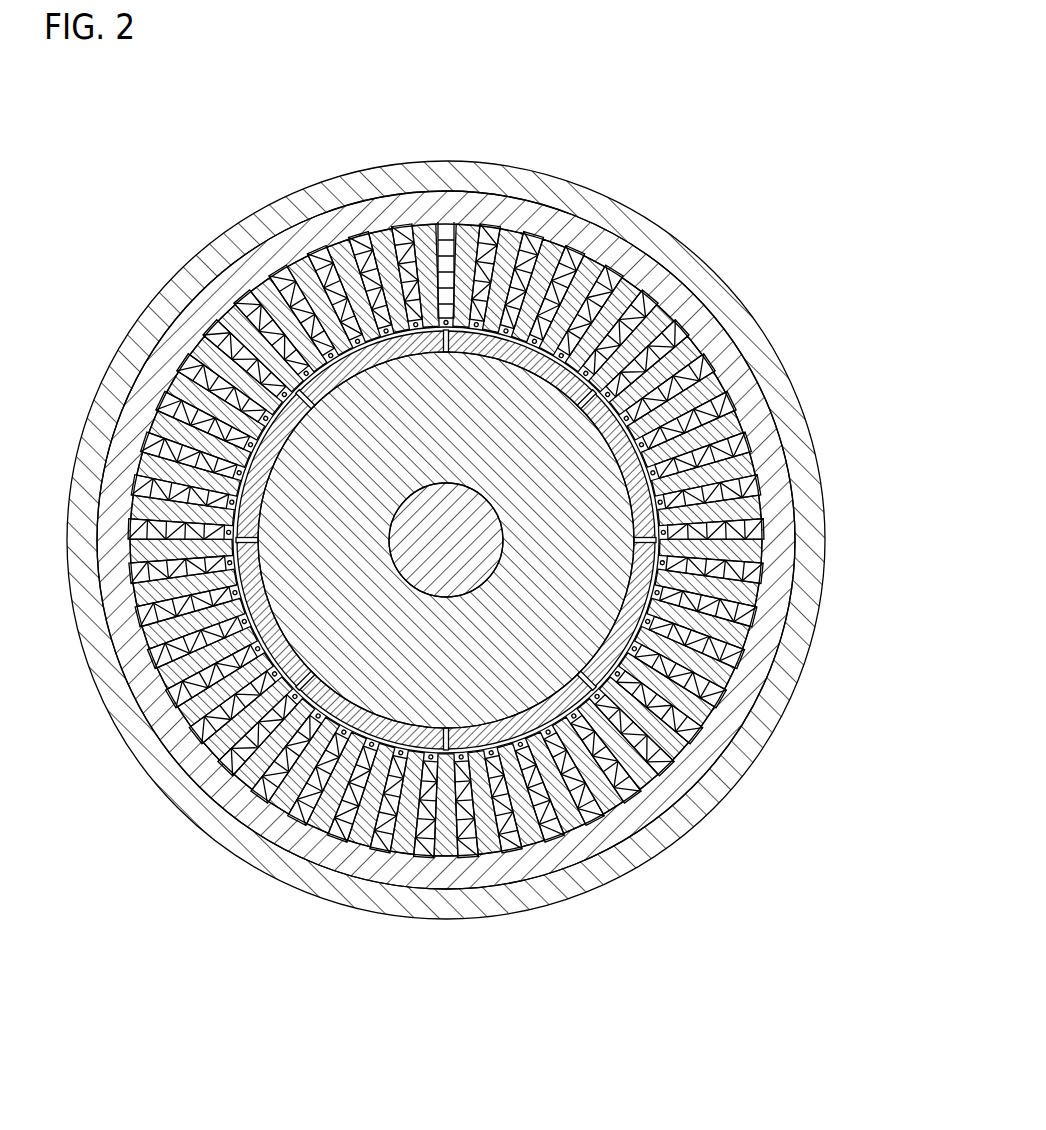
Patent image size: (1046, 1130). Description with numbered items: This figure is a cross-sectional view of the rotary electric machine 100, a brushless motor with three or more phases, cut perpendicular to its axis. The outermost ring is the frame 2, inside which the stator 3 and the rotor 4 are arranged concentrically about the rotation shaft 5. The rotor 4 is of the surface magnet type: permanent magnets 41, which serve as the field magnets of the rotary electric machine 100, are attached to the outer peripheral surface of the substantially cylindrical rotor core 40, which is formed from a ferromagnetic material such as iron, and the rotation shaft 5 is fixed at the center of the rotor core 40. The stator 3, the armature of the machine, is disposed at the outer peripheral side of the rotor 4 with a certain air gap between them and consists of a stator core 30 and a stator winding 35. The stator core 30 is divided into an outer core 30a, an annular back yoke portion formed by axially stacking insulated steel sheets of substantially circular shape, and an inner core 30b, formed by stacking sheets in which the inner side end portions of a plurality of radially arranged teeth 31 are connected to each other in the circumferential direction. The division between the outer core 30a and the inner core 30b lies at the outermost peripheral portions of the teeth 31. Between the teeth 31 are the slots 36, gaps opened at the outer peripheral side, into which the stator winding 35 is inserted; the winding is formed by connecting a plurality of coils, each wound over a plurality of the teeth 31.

The rotary electric machine 100 is at (150, 95).
The frame 2 is at (688, 247).
The stator 3 is at (934, 353).
The stator core 30 is at (890, 473).
The outer core 30a is at (775, 516).
The inner core 30b is at (660, 575).
The teeth 31 is at (592, 250).
The stator winding 35 is at (740, 417).
The slots 36 is at (643, 293).
The rotor 4 is at (668, 1022).
The rotor core 40 is at (498, 545).
The permanent magnets 41 is at (498, 745).
The rotation shaft 5 is at (470, 560).